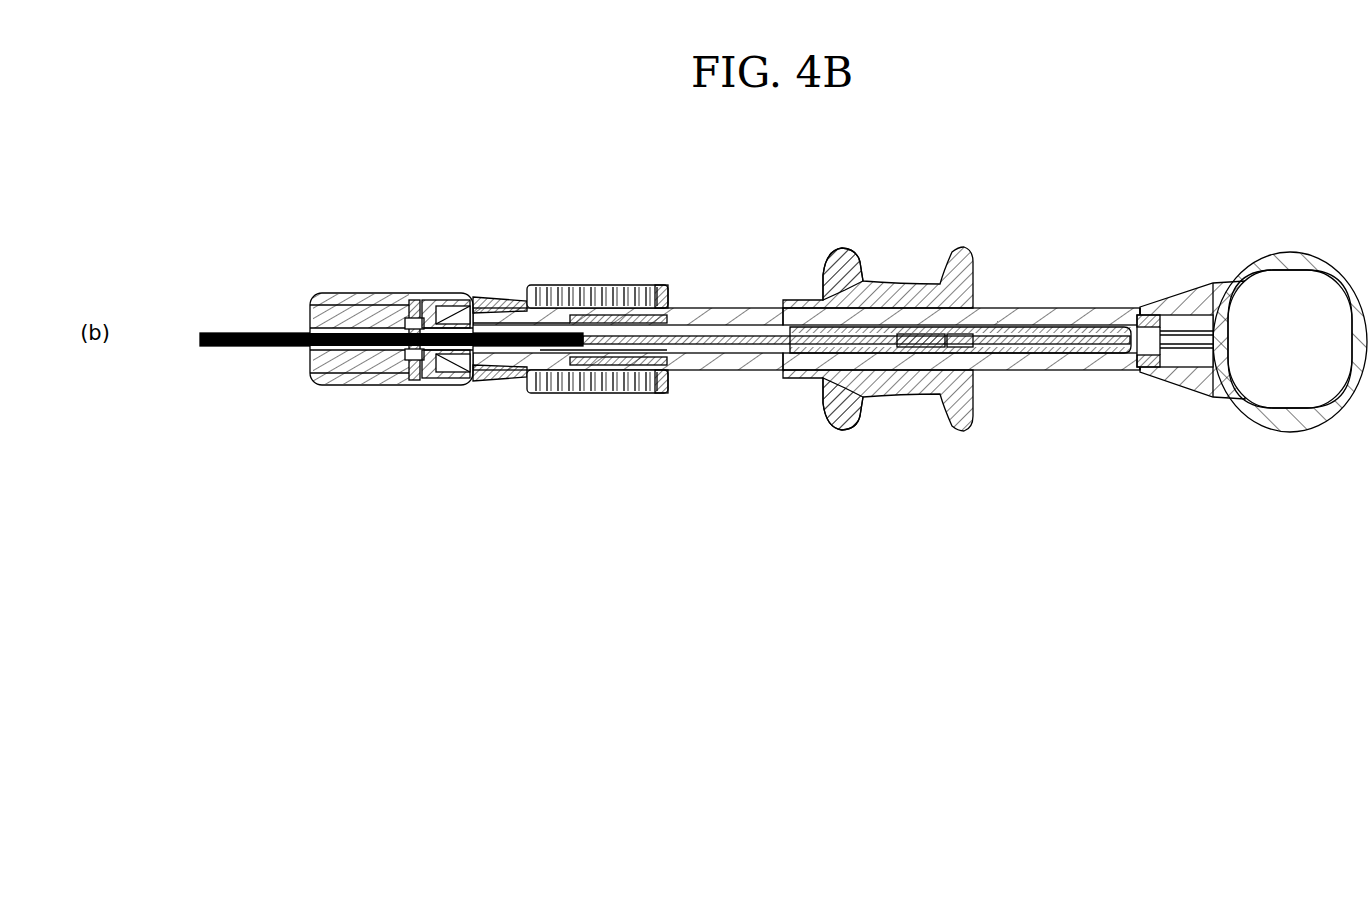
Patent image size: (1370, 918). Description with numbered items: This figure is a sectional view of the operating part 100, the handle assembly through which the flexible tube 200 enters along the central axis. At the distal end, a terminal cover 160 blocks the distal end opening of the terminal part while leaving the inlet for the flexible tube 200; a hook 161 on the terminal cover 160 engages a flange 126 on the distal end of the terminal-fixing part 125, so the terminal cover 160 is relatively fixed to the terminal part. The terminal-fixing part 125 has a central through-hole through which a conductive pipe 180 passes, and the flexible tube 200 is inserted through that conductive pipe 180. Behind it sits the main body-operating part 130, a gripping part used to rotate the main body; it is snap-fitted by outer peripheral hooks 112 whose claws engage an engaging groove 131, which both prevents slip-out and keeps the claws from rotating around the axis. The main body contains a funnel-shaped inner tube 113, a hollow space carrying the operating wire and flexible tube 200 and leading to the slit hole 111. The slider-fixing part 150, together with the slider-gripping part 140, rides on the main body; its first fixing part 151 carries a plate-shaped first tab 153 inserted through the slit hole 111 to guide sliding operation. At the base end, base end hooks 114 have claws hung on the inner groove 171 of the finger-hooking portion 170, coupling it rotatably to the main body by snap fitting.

The operating part 100 is at (241, 177).
The flexible tube 200 is at (253, 348).
The terminal cover 160 is at (345, 293).
The hook 161 is at (412, 293).
The flange 126 is at (436, 293).
The terminal-fixing part 125 is at (462, 385).
The conductive pipe 180 is at (476, 293).
The main body-operating part 130 is at (561, 285).
The engaging groove 131 is at (661, 285).
The outer peripheral hooks 112 is at (613, 287).
The slit hole 111 is at (1117, 322).
The inner tube 113 is at (552, 393).
The first tab 153 is at (972, 335).
The slider-fixing part 150 is at (947, 345).
The first fixing part 151 is at (978, 277).
The slider-gripping part 140 is at (850, 248).
The base end hooks 114 is at (1198, 302).
The finger-hooking portion 170 is at (1253, 325).
The inner groove 171 is at (1207, 396).